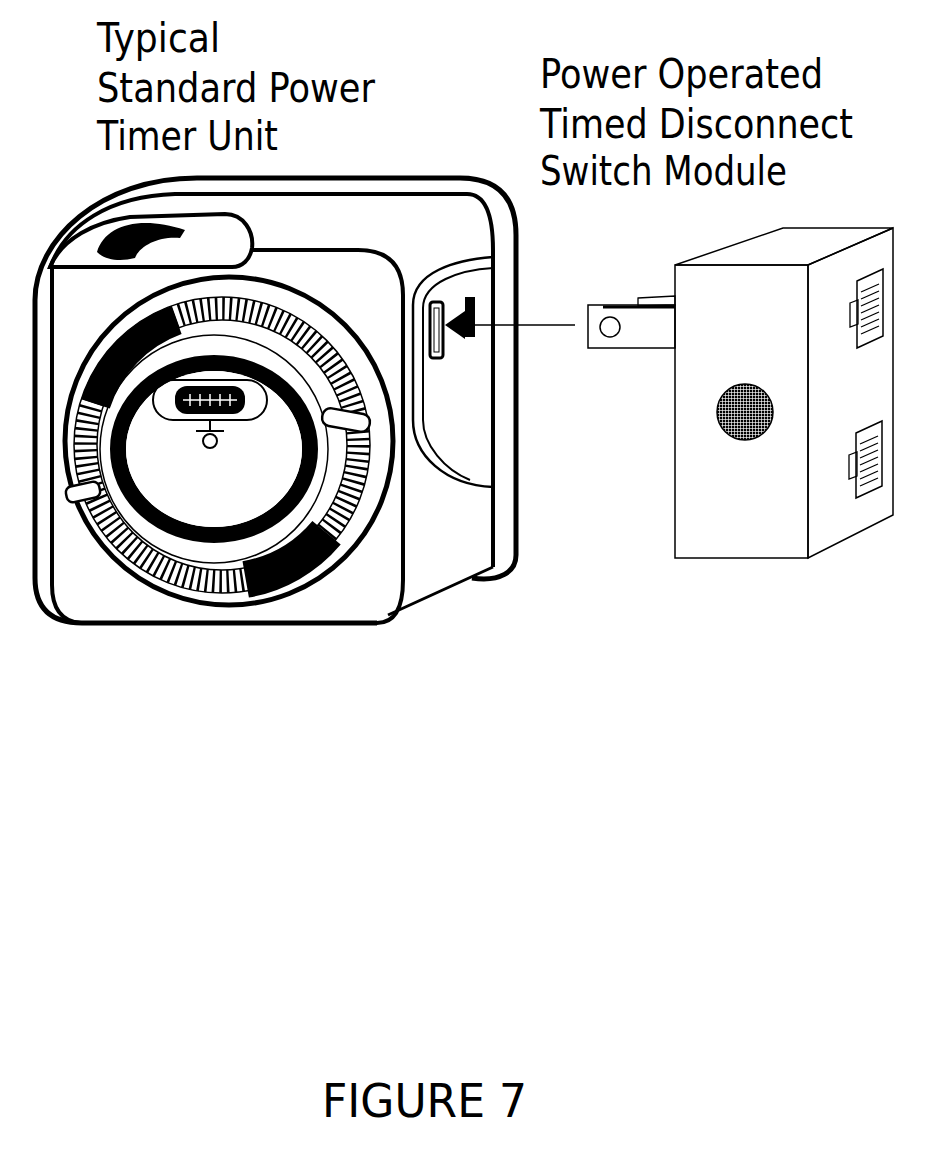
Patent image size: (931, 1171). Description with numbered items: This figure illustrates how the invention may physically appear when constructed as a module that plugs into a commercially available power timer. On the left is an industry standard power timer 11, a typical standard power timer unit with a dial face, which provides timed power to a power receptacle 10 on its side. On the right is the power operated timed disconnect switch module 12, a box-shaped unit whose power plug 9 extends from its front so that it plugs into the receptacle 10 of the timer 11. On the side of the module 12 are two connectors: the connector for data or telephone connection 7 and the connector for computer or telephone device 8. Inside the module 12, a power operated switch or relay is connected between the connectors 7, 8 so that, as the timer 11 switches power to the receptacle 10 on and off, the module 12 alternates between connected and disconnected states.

The connector for data or telephone connection 7 is at (866, 337).
The connector for computer or telephone device 8 is at (873, 483).
The power plug 9 is at (632, 310).
The power receptacle 10 is at (443, 338).
The industry standard power timer 11 is at (232, 623).
The power operated timed disconnect switch module 12 is at (778, 555).